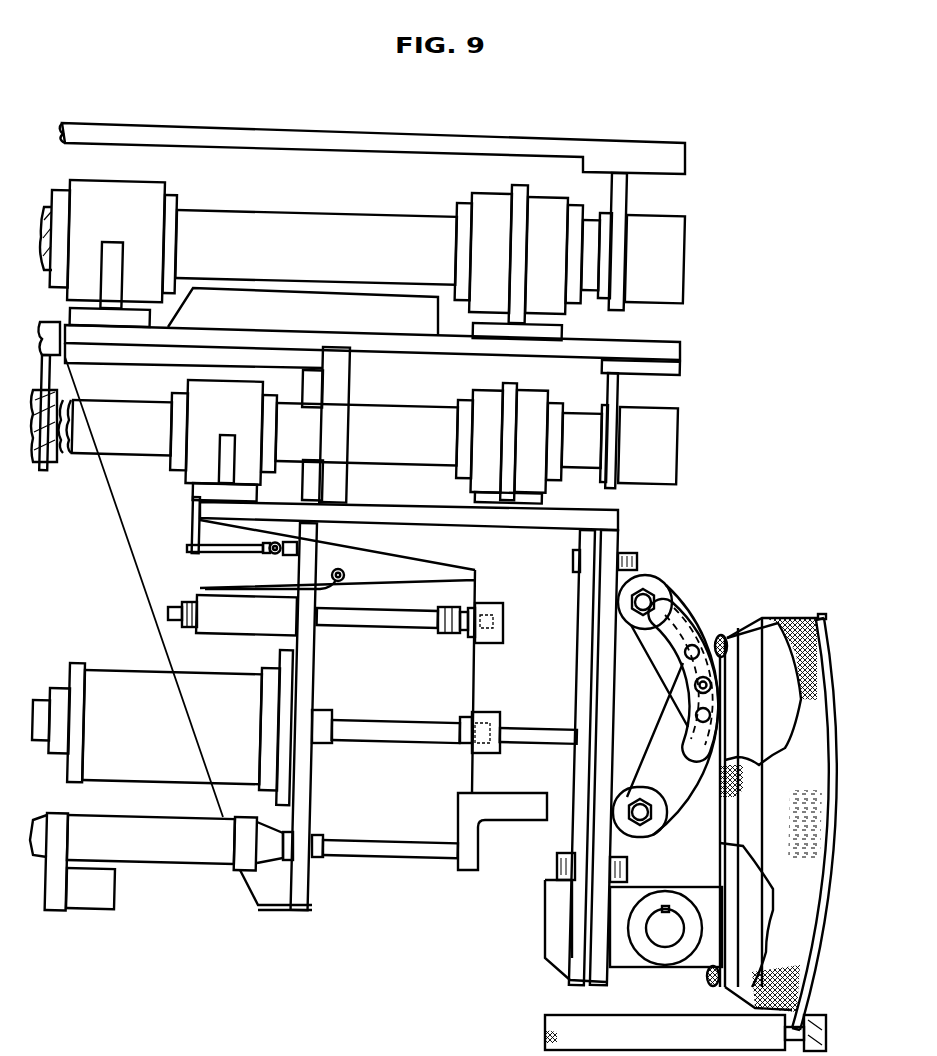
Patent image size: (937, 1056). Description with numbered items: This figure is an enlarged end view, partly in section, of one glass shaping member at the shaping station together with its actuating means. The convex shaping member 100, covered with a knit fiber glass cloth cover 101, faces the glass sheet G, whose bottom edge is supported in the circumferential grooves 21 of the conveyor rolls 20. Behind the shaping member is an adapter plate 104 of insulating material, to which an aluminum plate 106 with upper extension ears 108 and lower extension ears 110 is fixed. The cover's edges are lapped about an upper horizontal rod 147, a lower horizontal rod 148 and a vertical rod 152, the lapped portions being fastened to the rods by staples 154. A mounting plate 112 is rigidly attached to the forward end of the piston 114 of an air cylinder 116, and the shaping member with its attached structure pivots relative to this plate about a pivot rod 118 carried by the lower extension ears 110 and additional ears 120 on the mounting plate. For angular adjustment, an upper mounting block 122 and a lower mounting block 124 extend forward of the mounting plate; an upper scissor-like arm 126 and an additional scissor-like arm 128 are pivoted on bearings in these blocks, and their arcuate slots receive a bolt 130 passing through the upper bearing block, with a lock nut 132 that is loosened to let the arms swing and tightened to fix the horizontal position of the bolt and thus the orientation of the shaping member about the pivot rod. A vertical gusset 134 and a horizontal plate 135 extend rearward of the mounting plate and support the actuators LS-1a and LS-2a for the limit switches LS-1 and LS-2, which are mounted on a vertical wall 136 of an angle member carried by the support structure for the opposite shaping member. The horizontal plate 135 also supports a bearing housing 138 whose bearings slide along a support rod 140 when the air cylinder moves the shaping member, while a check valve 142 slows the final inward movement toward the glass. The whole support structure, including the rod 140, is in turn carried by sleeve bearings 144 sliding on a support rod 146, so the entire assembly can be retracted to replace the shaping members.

The sleeve bearings 144 is at (128, 192).
The support rod 146 is at (342, 263).
The support rod 140 is at (148, 440).
The bearing housing 138 is at (248, 390).
The horizontal plate 135 is at (362, 512).
The vertical gusset 134 is at (455, 553).
The vertical wall 136 is at (314, 663).
The piston 114 is at (383, 720).
The air cylinder 116 is at (180, 738).
The check valve 142 is at (177, 854).
The mounting plate 112 is at (605, 986).
The upper mounting block 122 is at (640, 578).
The lower mounting block 124 is at (632, 838).
The upper scissor-like arm 126 is at (672, 612).
The scissor-like arm 128 is at (690, 787).
The bolt 130 is at (695, 686).
The lock nut 132 is at (697, 700).
The additional ears 120 is at (632, 892).
The pivot rod 118 is at (660, 935).
The lower extension ears 110 is at (698, 968).
The staples 154 is at (714, 990).
The rolls 20 is at (564, 1018).
The grooves 21 is at (788, 1034).
The convex shaping member 100 is at (788, 612).
The knit fiber glass cloth covers 101 is at (817, 615).
The adapter plate 104 is at (744, 640).
The aluminum plate 106 is at (737, 630).
The upper extension ears 108 is at (713, 640).
The upper horizontal rod 147 is at (725, 655).
The lower horizontal rod 148 is at (718, 967).
The vertical rod 152 is at (745, 765).
The glass sheet G is at (826, 618).
The actuator LS-1a is at (235, 546).
The limit switch LS-1 is at (275, 553).
The actuator LS-2a is at (210, 589).
The limit switch LS-2 is at (344, 577).